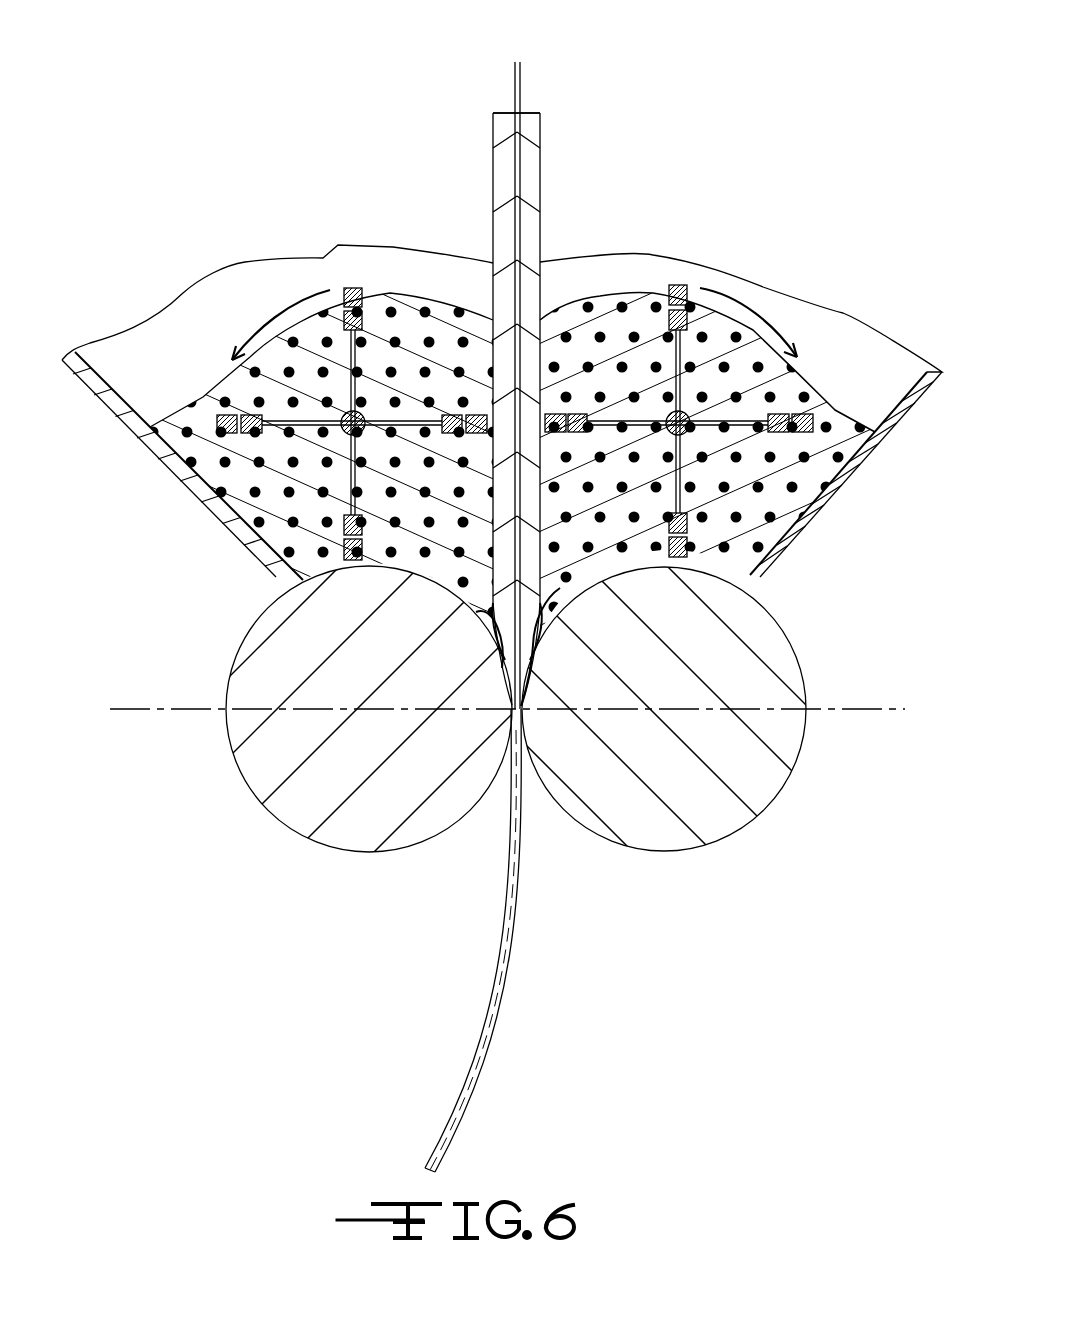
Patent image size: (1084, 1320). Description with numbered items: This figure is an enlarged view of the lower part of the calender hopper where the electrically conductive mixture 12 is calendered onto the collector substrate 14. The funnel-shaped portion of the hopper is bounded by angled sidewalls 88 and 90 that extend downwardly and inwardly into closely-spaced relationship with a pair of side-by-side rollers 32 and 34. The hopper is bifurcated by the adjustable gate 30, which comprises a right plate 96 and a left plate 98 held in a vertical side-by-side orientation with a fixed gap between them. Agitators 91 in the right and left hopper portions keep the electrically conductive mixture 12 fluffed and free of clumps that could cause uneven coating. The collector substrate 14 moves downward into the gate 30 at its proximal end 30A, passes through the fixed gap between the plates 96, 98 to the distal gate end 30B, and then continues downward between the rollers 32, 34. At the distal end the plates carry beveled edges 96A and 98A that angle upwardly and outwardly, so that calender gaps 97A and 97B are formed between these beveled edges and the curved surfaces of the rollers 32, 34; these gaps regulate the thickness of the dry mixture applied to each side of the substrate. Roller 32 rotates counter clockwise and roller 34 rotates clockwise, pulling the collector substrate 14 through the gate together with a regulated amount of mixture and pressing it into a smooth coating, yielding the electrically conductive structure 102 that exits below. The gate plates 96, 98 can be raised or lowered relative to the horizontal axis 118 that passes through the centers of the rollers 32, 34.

The electrically conductive mixture 12 is at (743, 363).
The collector substrate 14 is at (520, 80).
The adjustable gate 30 is at (504, 410).
The proximal end of the gate 30A is at (530, 113).
The distal end of the gate 30B is at (533, 610).
The roller 32 is at (747, 647).
The roller 34 is at (265, 778).
The angled sidewall 88 is at (793, 537).
The angled sidewall 90 is at (260, 547).
The agitators 91 is at (327, 407).
The right plate 96 is at (533, 237).
The beveled edge 96A is at (547, 627).
The calender gap 97A is at (537, 703).
The calender gap 97B is at (497, 663).
The left plate 98 is at (502, 240).
The beveled edge 98A is at (477, 613).
The electrically conductive structure 102 is at (500, 1028).
The horizontal axis 118 is at (883, 709).